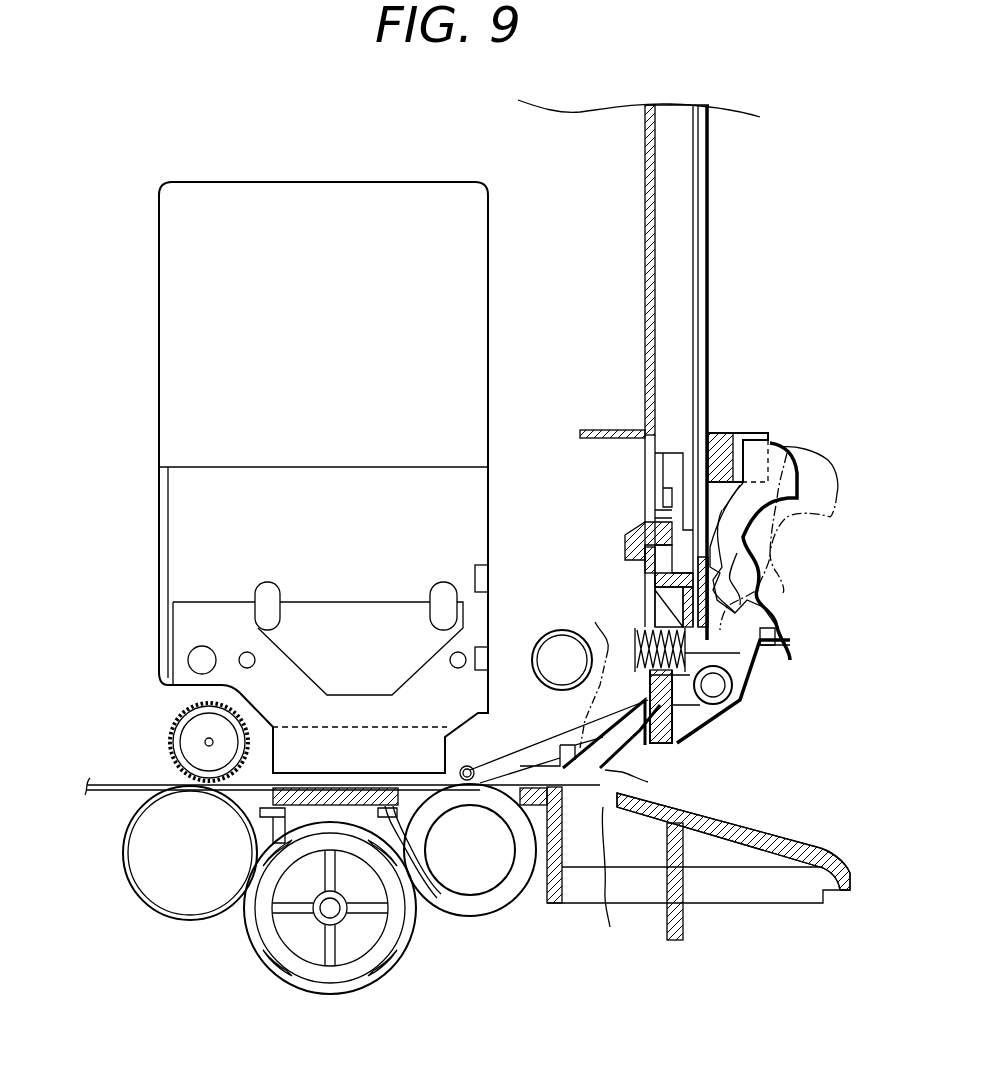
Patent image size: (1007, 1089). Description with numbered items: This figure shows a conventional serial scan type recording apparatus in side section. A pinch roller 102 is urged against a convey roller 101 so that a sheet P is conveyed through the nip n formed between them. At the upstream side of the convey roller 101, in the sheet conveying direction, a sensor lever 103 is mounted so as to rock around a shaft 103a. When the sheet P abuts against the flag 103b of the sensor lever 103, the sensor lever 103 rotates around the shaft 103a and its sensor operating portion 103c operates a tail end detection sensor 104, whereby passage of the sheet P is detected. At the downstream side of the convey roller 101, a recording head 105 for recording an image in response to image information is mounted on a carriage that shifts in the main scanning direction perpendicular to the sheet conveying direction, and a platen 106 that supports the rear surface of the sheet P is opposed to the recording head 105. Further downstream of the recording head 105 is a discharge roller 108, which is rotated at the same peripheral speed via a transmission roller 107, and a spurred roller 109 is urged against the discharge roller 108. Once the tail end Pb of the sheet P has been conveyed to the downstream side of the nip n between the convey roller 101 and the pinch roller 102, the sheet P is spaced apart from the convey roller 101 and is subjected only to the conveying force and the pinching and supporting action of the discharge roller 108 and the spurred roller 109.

The recording head 105 is at (167, 387).
The spurred roller 109 is at (182, 740).
The sheet P is at (148, 782).
The discharge roller 108 is at (135, 858).
The transmission roller 107 is at (338, 992).
The platen 106 is at (423, 897).
The convey roller 101 is at (477, 912).
The nip n is at (460, 769).
The pinch roller 102 is at (472, 768).
The tail end Pb is at (698, 871).
The flag 103b is at (583, 694).
The shaft 103a is at (735, 688).
The tail end detection sensor 104 is at (723, 432).
The sensor lever 103 is at (795, 545).
The sensor operating portion 103c is at (780, 448).